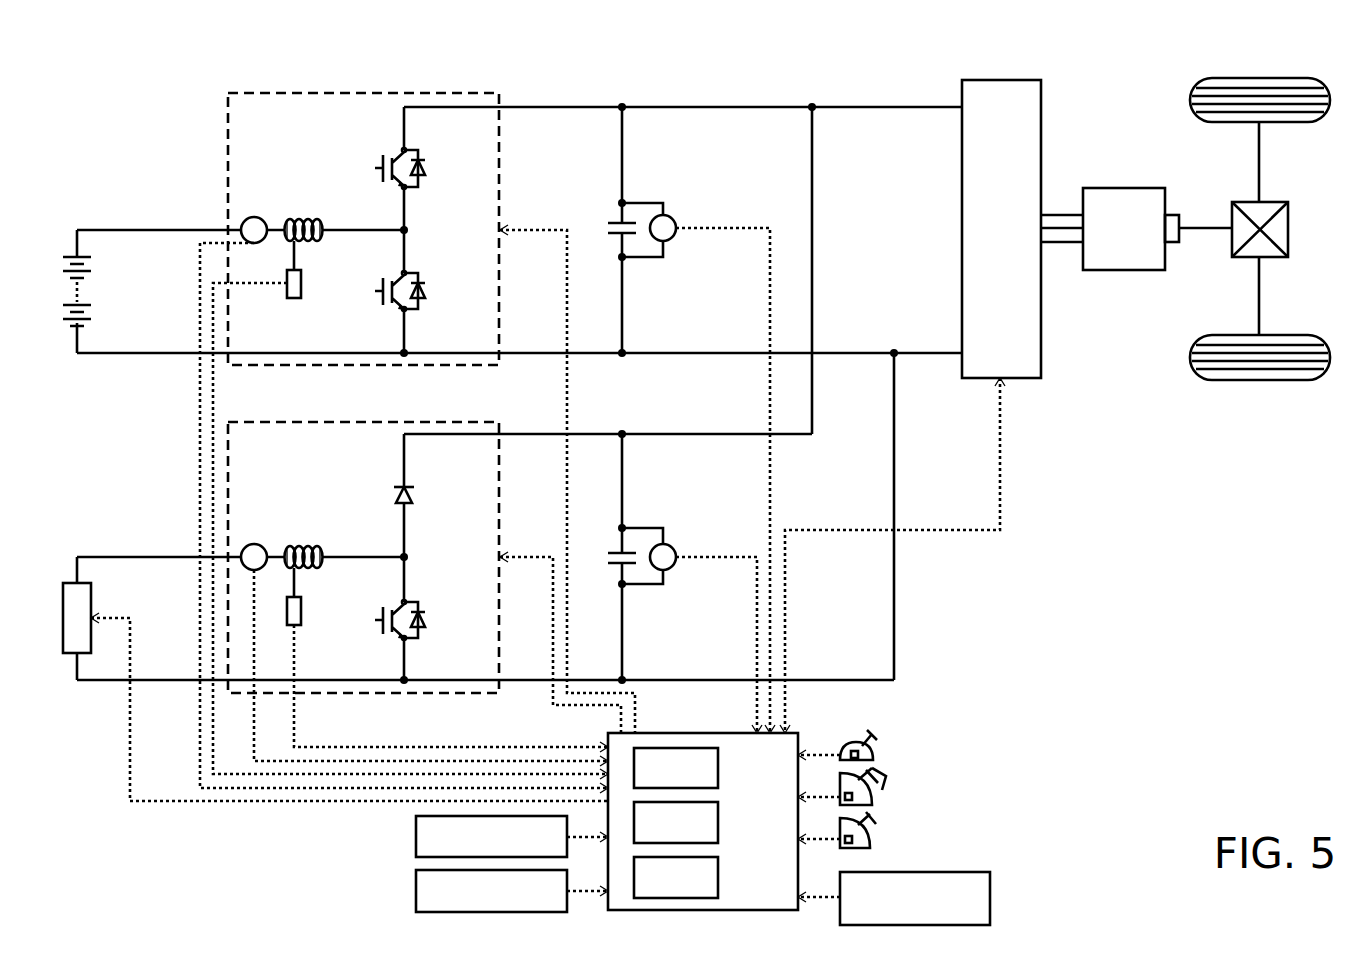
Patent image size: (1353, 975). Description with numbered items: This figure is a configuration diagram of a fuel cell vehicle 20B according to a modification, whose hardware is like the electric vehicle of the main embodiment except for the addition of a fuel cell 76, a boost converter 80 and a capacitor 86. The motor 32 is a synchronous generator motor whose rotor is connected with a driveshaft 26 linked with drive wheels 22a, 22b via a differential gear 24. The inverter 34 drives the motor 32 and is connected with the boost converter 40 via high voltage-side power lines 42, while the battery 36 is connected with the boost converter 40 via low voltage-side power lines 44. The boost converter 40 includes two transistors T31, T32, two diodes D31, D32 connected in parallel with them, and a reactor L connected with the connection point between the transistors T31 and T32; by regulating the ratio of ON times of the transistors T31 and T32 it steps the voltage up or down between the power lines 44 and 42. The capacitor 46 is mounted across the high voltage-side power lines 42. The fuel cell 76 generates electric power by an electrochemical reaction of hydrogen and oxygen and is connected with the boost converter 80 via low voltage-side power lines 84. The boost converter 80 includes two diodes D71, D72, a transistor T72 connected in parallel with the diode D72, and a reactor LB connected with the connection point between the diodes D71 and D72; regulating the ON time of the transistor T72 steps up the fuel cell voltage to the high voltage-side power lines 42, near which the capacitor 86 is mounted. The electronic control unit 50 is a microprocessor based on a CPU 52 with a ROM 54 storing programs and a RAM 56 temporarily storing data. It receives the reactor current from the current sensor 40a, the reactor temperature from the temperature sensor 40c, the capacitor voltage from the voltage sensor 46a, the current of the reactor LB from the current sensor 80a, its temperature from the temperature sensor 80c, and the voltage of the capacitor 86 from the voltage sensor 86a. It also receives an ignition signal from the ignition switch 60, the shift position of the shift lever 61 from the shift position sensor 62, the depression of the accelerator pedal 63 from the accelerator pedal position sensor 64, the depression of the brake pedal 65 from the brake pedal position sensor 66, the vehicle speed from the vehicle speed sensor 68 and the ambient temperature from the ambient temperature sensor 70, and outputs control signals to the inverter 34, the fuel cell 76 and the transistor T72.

The fuel cell vehicle 20B is at (1168, 59).
The drive wheel 22a is at (1258, 78).
The drive wheel 22b is at (1258, 381).
The differential gear 24 is at (1274, 202).
The driveshaft 26 is at (1206, 226).
The motor 32 is at (1124, 188).
The inverter 34 is at (992, 80).
The battery 36 is at (76, 327).
The boost converter 40 is at (289, 92).
The current sensor 40a is at (252, 216).
The temperature sensor 40c is at (303, 287).
The reactor L is at (304, 218).
The transistor T31 is at (387, 160).
The diode D31 is at (422, 179).
The transistor T32 is at (387, 287).
The diode D32 is at (423, 310).
The high voltage-side power lines 42 is at (921, 108).
The low voltage-side power lines 44 is at (172, 232).
The capacitor 46 is at (614, 220).
The voltage sensor 46a is at (663, 215).
The electronic control unit 50 is at (703, 733).
The CPU 52 is at (718, 768).
The ROM 54 is at (718, 823).
The RAM 56 is at (718, 878).
The ignition switch 60 is at (416, 837).
The shift lever 61 is at (876, 739).
The shift position sensor 62 is at (873, 757).
The accelerator pedal 63 is at (886, 785).
The accelerator pedal position sensor 64 is at (866, 799).
The brake pedal 65 is at (878, 832).
The brake pedal position sensor 66 is at (868, 843).
The vehicle speed sensor 68 is at (416, 891).
The ambient temperature sensor 70 is at (990, 897).
The fuel cell 76 is at (73, 656).
The boost converter 80 is at (290, 420).
The current sensor 80a is at (253, 543).
The temperature sensor 80c is at (303, 612).
The reactor LB is at (304, 545).
The diode D71 is at (414, 504).
The transistor T72 is at (387, 612).
The diode D72 is at (423, 640).
The low voltage-side power lines 84 is at (172, 678).
The capacitor 86 is at (614, 548).
The voltage sensor 86a is at (663, 544).